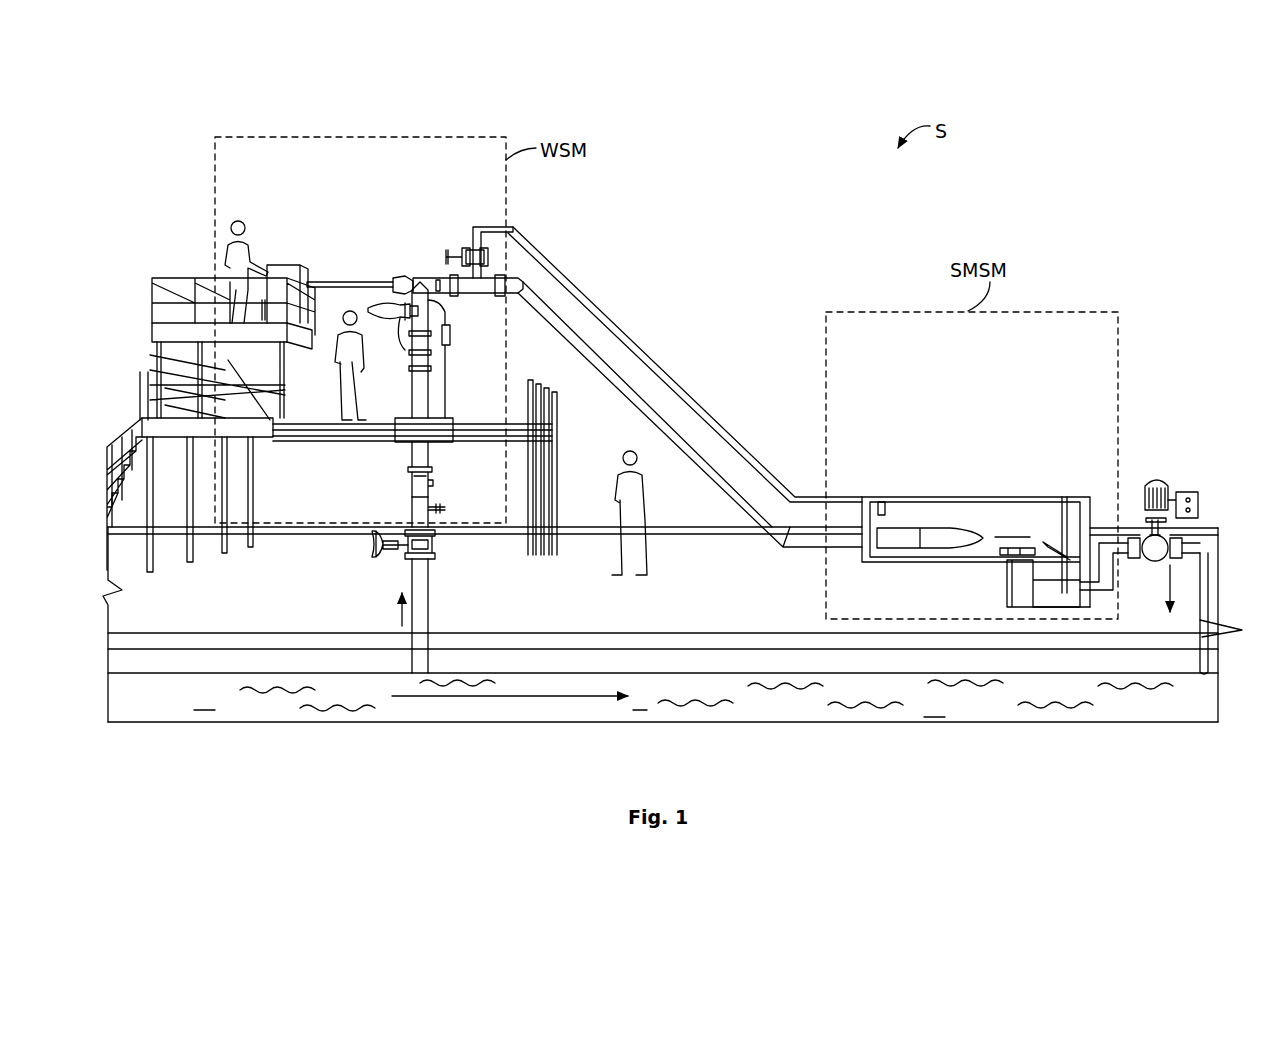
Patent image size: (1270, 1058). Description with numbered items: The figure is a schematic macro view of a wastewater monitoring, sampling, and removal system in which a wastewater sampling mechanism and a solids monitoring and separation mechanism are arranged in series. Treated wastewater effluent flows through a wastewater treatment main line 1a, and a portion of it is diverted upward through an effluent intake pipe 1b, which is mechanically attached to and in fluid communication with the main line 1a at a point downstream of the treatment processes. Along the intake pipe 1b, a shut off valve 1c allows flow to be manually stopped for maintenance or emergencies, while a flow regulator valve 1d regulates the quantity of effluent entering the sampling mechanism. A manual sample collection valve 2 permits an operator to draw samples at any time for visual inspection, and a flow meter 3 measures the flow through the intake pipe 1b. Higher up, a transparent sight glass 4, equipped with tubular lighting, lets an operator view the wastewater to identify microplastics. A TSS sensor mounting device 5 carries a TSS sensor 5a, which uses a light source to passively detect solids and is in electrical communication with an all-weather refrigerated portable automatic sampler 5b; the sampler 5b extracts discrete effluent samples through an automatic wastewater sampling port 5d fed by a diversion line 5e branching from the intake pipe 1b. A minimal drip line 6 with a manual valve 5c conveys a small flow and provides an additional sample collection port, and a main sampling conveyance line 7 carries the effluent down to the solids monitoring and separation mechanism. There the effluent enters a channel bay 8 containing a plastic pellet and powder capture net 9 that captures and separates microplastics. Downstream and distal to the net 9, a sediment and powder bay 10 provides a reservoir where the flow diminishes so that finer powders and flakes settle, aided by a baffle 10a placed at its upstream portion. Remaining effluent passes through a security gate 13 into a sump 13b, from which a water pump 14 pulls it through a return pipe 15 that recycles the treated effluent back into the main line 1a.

The main line 1a is at (322, 724).
The effluent intake pipe 1b is at (431, 600).
The shut off valve 1c is at (400, 560).
The flow regulator valve 1d is at (440, 552).
The manual sample collection valve 2 is at (448, 507).
The flow meter 3 is at (406, 478).
The transparent sight glass 4 is at (440, 356).
The TSS sensor mounting device 5 is at (402, 318).
The TSS sensor 5a is at (383, 302).
The all-weather refrigerated portable automatic sampler 5b is at (290, 266).
The manual valve 5c is at (477, 228).
The automatic wastewater sampling port 5d is at (418, 280).
The diversion line 5e is at (358, 282).
The minimal drip line 6 is at (652, 342).
The main sampling conveyance line 7 is at (637, 410).
The channel bay 8 is at (862, 556).
The plastic pellet and powder capture net 9 is at (926, 526).
The sediment and powder bay 10 is at (1012, 536).
The baffle 10a is at (1003, 553).
The security gate 13 is at (1060, 542).
The sump 13b is at (1008, 595).
The water pump 14 is at (1158, 478).
The return pipe 15 is at (1219, 575).